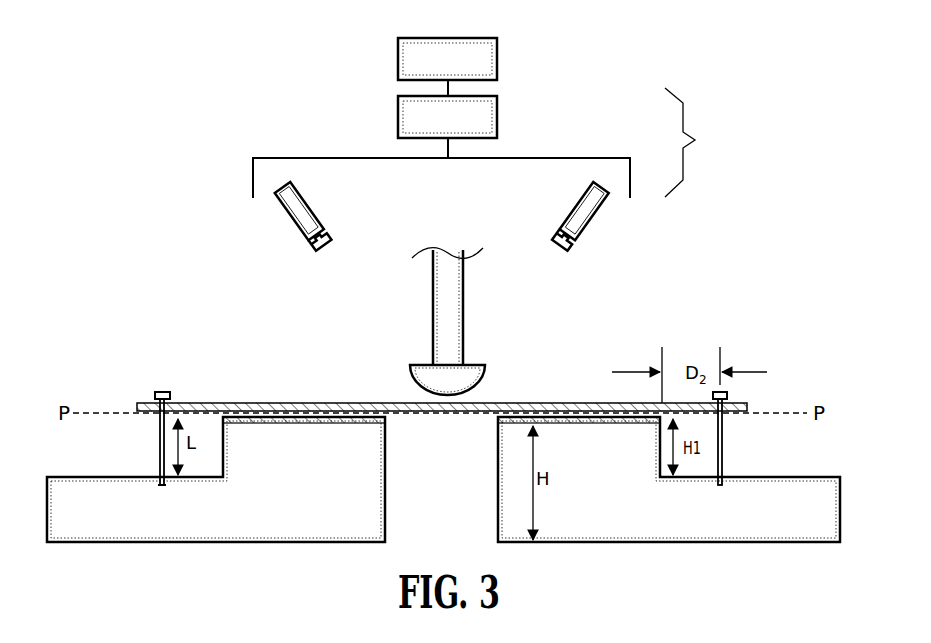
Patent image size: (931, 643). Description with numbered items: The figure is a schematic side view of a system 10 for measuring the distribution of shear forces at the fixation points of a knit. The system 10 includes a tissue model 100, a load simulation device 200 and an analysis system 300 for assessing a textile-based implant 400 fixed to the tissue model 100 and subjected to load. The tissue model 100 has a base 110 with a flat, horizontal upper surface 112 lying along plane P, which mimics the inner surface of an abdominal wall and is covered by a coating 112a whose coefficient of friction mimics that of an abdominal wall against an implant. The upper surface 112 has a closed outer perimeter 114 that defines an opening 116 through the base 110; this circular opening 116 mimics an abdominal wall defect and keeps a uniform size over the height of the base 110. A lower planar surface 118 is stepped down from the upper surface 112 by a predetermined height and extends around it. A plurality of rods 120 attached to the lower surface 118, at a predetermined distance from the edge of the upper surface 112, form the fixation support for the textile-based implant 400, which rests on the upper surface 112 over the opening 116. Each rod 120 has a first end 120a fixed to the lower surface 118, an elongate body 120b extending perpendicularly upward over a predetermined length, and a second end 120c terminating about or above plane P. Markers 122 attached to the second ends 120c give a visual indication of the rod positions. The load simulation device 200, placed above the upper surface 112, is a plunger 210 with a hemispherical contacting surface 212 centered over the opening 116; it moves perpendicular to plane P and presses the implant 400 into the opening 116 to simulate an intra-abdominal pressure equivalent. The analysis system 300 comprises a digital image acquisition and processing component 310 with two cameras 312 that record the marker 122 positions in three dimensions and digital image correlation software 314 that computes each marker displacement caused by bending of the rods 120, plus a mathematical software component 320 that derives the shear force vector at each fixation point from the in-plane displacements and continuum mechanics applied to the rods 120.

The system 10 is at (206, 104).
The tissue model 100 is at (60, 463).
The base 110 is at (44, 511).
The upper surface 112 is at (258, 413).
The coating 112a is at (338, 413).
The closed outer perimeter 114 is at (602, 413).
The opening 116 is at (455, 490).
The lower planar surface 118 is at (780, 477).
The rods 120 is at (723, 437).
The first end 120a is at (158, 478).
The elongate body 120b is at (159, 441).
The second end 120c is at (155, 398).
The markers 122 is at (166, 391).
The load simulation device 200 is at (405, 340).
The plunger 210 is at (463, 306).
The contacting surface 212 is at (482, 382).
The analysis system 300 is at (285, 118).
The digital image acquisition and processing component 310 is at (694, 142).
The cameras 312 is at (308, 198).
The digital image correlation software 314 is at (447, 117).
The mathematical software component 320 is at (447, 59).
The textile-based implant 400 is at (200, 403).